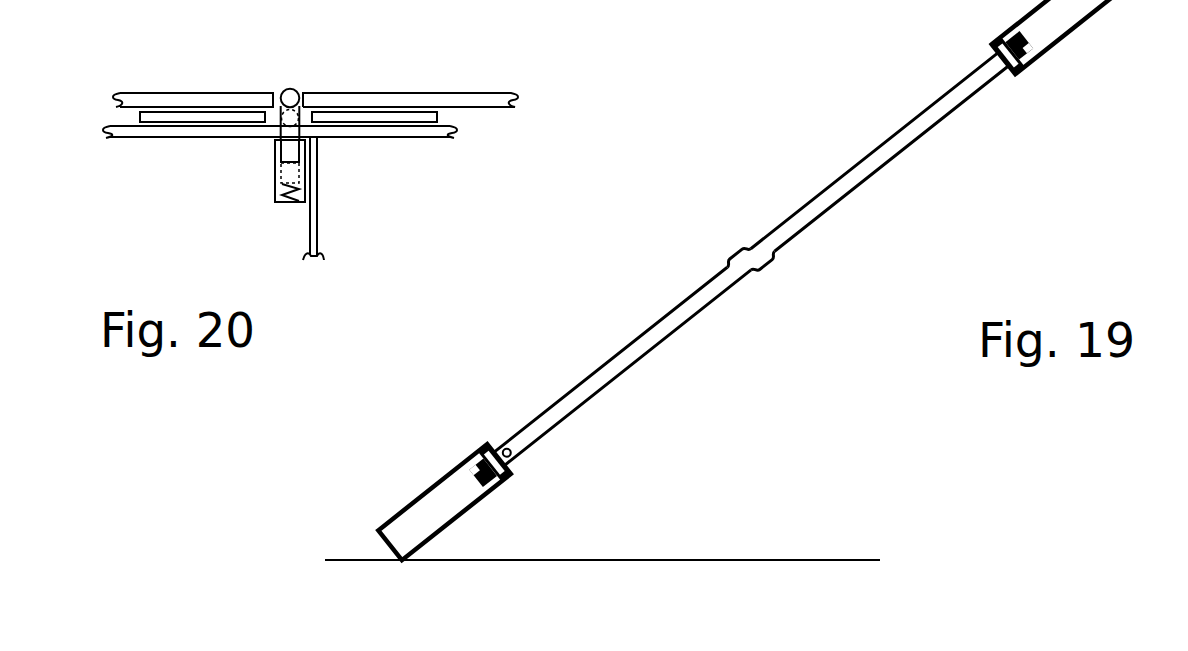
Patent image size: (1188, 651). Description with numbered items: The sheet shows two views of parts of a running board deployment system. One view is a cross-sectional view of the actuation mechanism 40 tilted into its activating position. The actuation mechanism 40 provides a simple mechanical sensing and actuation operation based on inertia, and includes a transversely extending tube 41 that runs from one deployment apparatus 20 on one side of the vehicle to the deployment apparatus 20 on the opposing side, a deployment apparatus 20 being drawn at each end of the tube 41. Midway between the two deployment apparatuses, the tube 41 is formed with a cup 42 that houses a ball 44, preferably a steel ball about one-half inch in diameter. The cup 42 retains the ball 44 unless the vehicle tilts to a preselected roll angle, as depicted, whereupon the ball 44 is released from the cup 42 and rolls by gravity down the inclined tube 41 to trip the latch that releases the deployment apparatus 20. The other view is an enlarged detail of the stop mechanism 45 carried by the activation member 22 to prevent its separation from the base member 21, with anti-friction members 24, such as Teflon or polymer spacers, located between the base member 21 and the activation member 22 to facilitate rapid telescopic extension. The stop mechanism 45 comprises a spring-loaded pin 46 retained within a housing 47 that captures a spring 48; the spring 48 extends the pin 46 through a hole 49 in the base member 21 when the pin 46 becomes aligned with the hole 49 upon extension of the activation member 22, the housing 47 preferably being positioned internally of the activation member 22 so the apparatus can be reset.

In FIG. 19, the deployment apparatus 20 is at (447, 500).
In FIG. 20, the base member 21 is at (448, 93).
In FIG. 20, the activation member 22 is at (421, 140).
In FIG. 20, the anti-friction members 24 is at (437, 114).
In FIG. 19, the actuation mechanism 40 is at (962, 185).
In FIG. 19, the tube 41 is at (663, 327).
In FIG. 19, the cup 42 is at (765, 262).
In FIG. 19, the ball 44 is at (512, 449).
In FIG. 20, the stop mechanism 45 is at (215, 201).
In FIG. 20, the pin 46 is at (285, 150).
In FIG. 20, the housing 47 is at (283, 204).
In FIG. 20, the spring 48 is at (300, 192).
In FIG. 20, the hole 49 is at (278, 80).